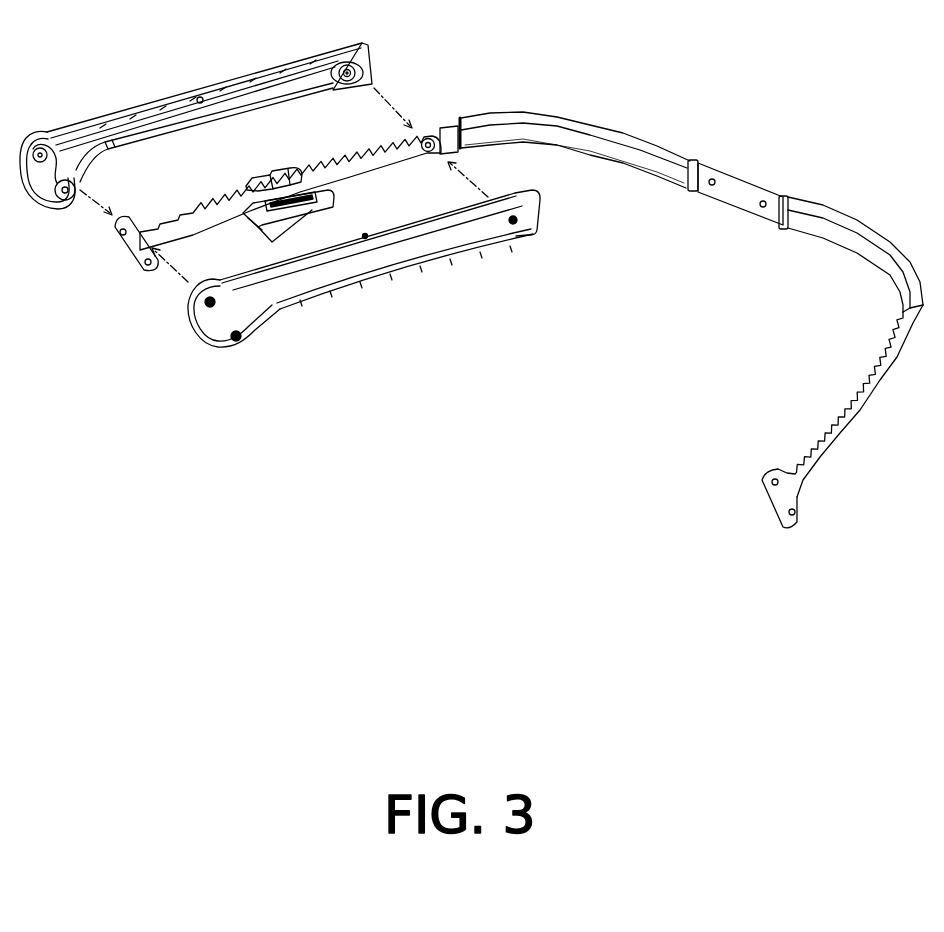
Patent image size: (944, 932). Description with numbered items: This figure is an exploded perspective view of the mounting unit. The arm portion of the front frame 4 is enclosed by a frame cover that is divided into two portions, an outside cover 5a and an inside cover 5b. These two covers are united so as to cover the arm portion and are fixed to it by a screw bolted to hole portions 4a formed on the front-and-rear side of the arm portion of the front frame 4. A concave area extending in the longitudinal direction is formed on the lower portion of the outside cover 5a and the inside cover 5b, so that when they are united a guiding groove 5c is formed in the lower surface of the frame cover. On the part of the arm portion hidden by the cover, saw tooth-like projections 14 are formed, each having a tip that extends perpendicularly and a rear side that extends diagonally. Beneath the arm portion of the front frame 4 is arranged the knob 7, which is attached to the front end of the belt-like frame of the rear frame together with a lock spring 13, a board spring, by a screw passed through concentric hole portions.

The front frame 4 is at (510, 128).
The hole portions 4a is at (427, 138).
The outside cover 5a is at (253, 90).
The inside cover 5b is at (343, 272).
The guiding groove 5c is at (133, 147).
The knob 7 is at (274, 241).
The lock spring 13 is at (272, 171).
The saw tooth-like projections 14 is at (230, 193).